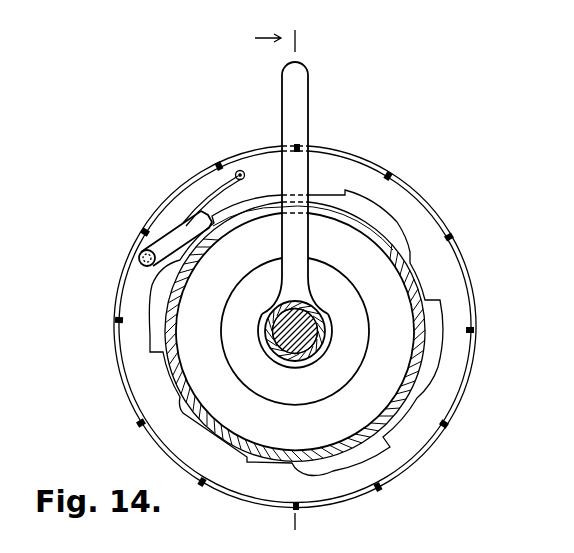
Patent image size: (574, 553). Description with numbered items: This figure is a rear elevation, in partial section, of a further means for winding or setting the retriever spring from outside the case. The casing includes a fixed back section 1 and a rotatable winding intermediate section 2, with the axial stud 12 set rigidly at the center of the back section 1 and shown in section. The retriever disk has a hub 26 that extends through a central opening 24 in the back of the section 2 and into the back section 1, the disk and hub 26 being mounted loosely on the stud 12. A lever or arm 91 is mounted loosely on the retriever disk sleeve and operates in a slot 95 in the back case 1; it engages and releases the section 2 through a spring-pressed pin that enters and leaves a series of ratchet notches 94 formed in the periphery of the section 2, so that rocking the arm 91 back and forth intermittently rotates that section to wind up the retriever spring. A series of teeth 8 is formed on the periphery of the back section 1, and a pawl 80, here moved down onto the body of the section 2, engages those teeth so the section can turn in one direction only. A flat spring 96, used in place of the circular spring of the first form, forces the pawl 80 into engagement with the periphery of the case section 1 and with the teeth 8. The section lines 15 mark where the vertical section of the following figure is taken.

The back section 1 is at (413, 367).
The intermediate section 2 is at (462, 297).
The teeth 8 is at (300, 470).
The axial stud 12 is at (314, 345).
The section lines 15 is at (289, 279).
The central opening 24 is at (295, 331).
The hub 26 is at (280, 346).
The pawl 80 is at (171, 242).
The lever or arm 91 is at (306, 113).
The ratchet notches 94 is at (396, 171).
The slot 95 is at (359, 214).
The flat spring 96 is at (225, 186).